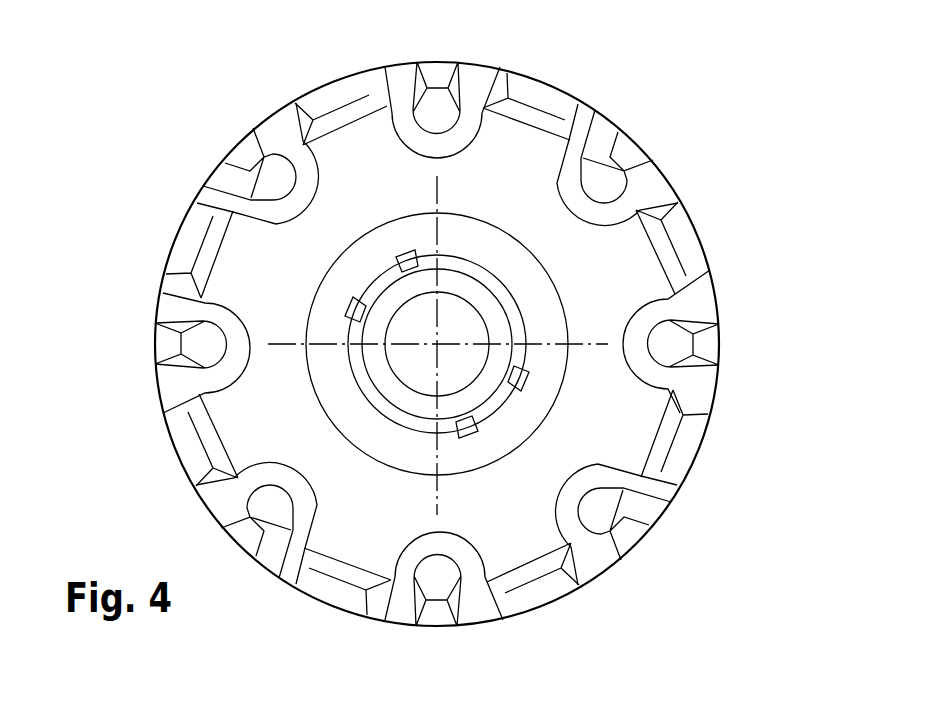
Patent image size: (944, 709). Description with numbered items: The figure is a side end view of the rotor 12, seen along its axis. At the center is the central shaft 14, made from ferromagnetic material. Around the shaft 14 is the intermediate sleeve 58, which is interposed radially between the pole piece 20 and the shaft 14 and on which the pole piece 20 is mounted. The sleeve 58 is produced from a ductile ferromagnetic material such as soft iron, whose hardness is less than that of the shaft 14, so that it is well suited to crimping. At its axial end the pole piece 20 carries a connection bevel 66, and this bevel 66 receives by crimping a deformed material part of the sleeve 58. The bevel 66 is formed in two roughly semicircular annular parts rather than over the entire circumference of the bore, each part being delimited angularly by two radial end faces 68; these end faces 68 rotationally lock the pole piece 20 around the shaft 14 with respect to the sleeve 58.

The rotor 12 is at (212, 119).
The central shaft 14 is at (547, 637).
The pole piece 20 is at (518, 168).
The intermediate sleeve 58 is at (380, 372).
The connection bevel 66 is at (513, 313).
The radial end face 68 is at (417, 252).